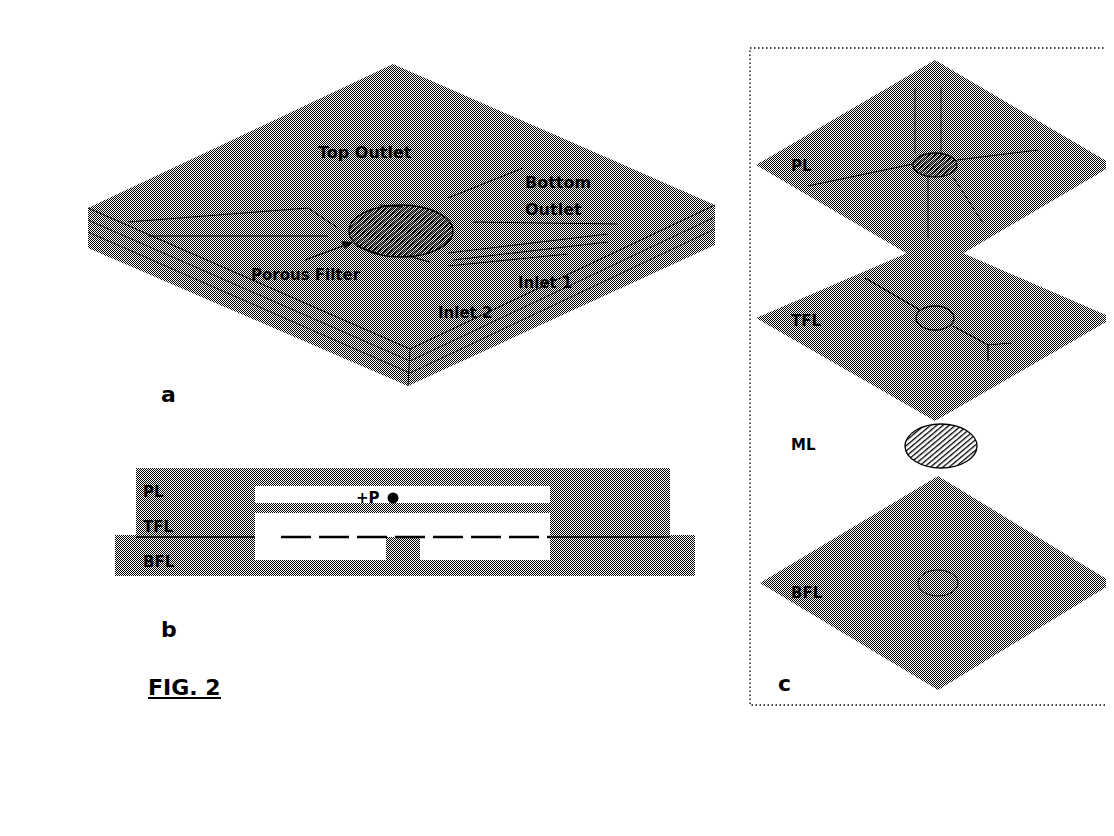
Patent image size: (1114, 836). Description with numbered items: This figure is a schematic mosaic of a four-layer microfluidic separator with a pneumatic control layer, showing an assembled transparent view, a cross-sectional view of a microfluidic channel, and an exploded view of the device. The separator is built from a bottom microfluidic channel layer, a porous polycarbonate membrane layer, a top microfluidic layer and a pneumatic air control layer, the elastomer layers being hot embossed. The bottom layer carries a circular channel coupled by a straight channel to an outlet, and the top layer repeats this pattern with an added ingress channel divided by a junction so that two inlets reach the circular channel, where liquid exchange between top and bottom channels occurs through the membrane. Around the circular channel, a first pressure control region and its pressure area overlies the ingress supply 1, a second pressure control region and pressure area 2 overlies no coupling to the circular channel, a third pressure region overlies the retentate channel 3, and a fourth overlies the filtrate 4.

The ingress supply 1 is at (419, 267).
The second pressure control region and pressure area 2 is at (538, 224).
The retentate channel 3 is at (368, 254).
The filtrate 4 is at (391, 198).